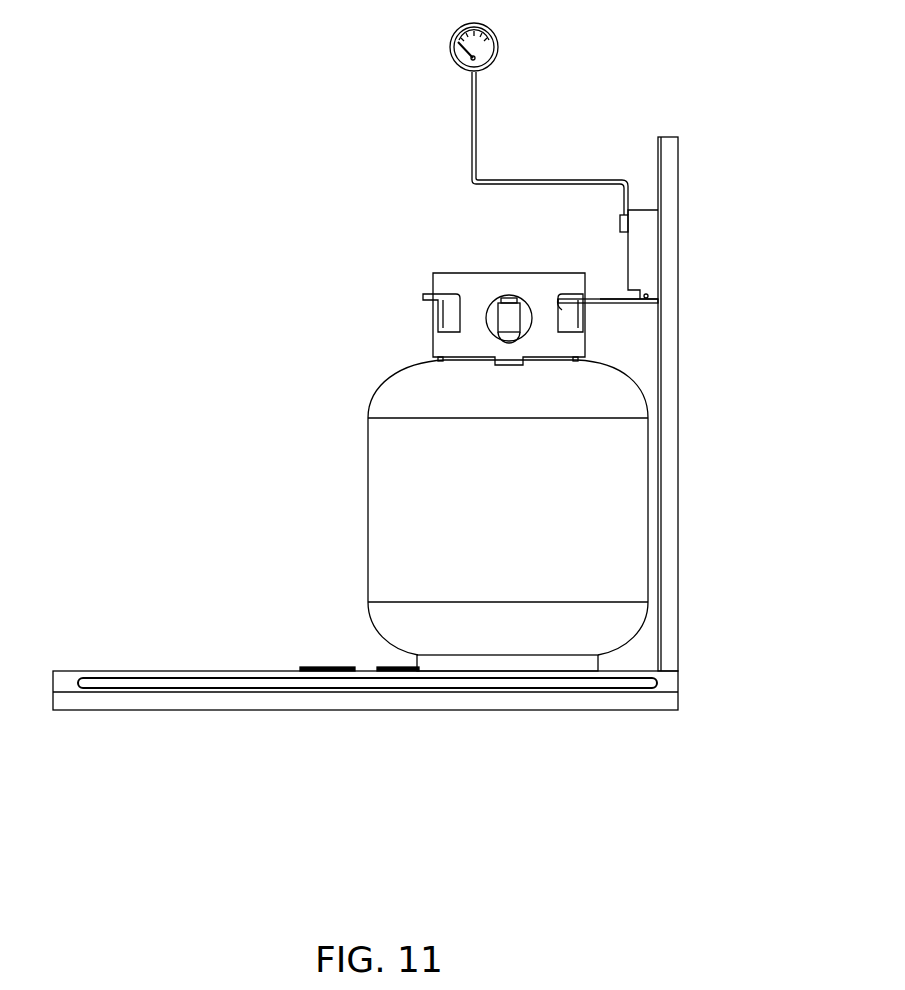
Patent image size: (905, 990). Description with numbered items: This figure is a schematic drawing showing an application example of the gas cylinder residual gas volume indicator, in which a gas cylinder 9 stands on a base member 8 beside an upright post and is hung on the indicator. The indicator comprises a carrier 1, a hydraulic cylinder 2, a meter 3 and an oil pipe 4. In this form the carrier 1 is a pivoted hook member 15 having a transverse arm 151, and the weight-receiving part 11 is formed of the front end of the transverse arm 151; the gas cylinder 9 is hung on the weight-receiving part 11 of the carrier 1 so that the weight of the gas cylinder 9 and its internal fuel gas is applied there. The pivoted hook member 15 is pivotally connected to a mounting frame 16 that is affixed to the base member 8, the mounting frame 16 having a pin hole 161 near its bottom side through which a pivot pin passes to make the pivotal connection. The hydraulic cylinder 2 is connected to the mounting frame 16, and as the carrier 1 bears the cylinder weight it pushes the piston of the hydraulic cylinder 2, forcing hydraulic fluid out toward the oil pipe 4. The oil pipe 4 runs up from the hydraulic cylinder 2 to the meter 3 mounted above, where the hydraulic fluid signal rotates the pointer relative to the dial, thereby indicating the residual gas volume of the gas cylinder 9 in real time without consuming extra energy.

The carrier 1 is at (681, 358).
The pivoted hook member 15 is at (602, 305).
The transverse arm 151 is at (620, 305).
The mounting frame 16 is at (642, 245).
The pin hole 161 is at (650, 295).
The hydraulic cylinder 2 is at (620, 223).
The meter 3 is at (455, 35).
The oil pipe 4 is at (472, 137).
The base member 8 is at (290, 668).
The gas cylinder 9 is at (395, 460).
The weight-receiving part 11 is at (622, 292).